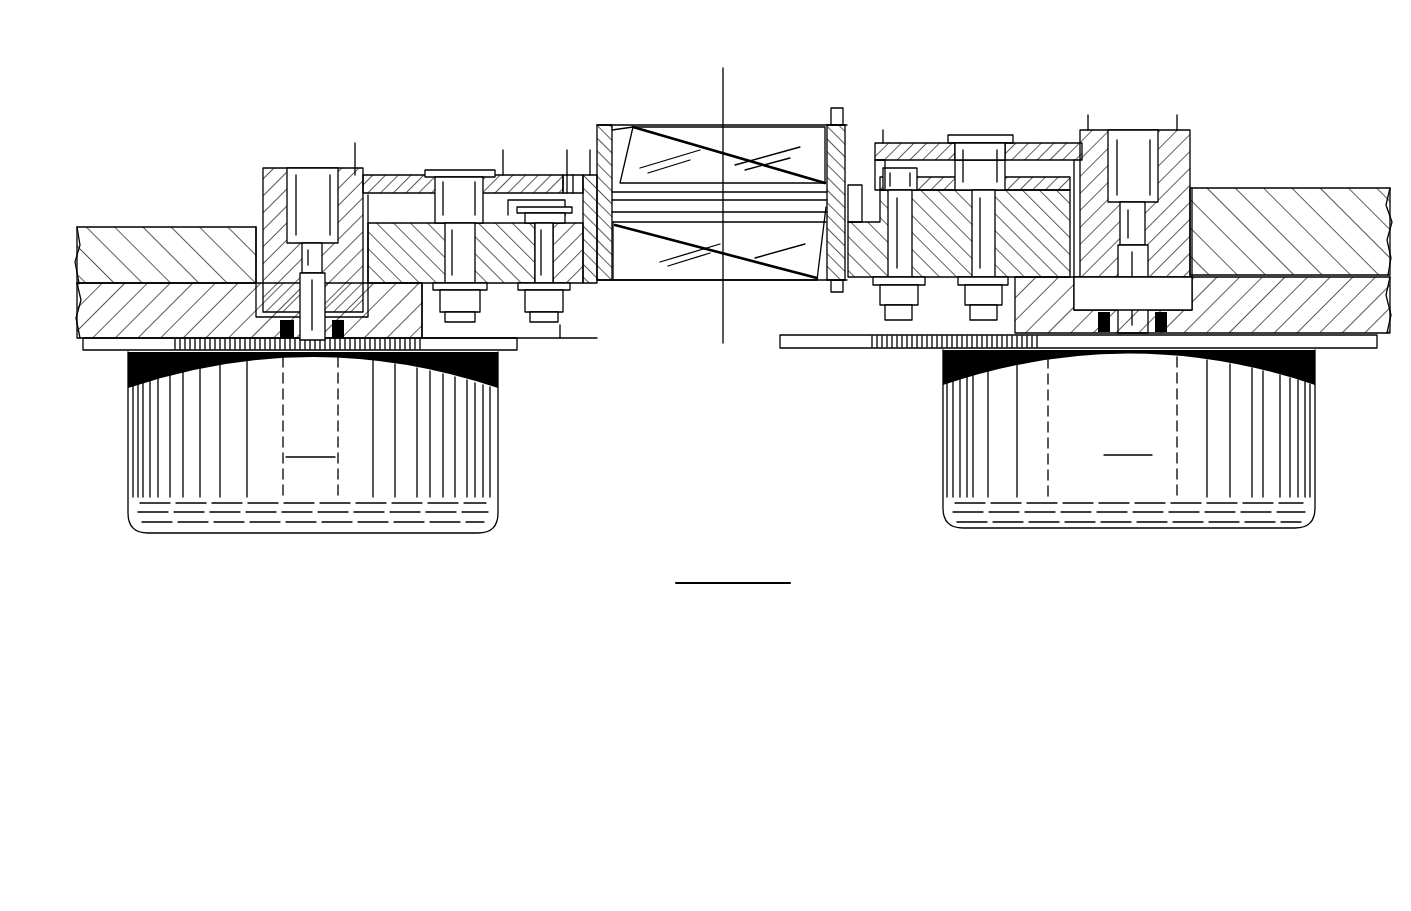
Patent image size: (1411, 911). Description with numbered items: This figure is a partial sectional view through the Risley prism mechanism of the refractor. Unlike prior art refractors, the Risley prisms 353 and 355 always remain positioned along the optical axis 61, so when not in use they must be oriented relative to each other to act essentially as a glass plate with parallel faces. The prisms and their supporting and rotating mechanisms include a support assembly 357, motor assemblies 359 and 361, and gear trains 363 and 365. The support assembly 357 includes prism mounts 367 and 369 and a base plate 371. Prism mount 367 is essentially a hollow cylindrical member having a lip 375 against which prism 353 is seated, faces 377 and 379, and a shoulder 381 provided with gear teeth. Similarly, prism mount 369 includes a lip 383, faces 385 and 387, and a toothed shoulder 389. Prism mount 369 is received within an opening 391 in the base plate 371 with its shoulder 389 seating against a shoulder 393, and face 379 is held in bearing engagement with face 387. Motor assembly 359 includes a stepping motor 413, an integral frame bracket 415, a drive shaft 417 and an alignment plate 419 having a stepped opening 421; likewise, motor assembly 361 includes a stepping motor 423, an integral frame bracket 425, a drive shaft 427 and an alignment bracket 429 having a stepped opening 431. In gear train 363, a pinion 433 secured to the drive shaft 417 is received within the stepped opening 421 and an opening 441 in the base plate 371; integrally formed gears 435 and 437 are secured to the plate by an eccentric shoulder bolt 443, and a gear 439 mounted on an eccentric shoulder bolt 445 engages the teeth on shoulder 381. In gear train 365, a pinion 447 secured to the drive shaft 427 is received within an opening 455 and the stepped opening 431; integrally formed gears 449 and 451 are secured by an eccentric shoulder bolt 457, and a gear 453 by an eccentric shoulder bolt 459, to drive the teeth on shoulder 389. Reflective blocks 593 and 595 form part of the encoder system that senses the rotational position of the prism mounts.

The optical axis 61 is at (723, 120).
The Risley prism 353 is at (750, 162).
The Risley prism 355 is at (712, 270).
The support assembly 357 is at (1309, 148).
The motor assembly 359 is at (1330, 408).
The motor assembly 361 is at (121, 420).
The gear train 363 is at (1028, 88).
The gear train 365 is at (446, 132).
The prism mount 367 is at (850, 172).
The prism mount 369 is at (620, 253).
The base plate 371 is at (1360, 200).
The lip 375 is at (622, 185).
The face 377 is at (600, 125).
The face 379 is at (625, 210).
The shoulder 381 is at (866, 205).
The lip 383 is at (832, 207).
The face 385 is at (642, 273).
The face 387 is at (623, 127).
The shoulder 389 is at (818, 225).
The opening 391 is at (820, 270).
The shoulder 393 is at (860, 270).
The stepping motor 413 is at (1129, 439).
The integral frame bracket 415 is at (1330, 350).
The drive shaft 417 is at (1137, 275).
The alignment plate 419 is at (1357, 349).
The stepped opening 421 is at (1183, 300).
The stepping motor 423 is at (313, 442).
The integral frame bracket 425 is at (118, 352).
The drive shaft 427 is at (298, 288).
The alignment bracket 429 is at (565, 325).
The stepped opening 431 is at (256, 313).
The pinion 433 is at (1175, 182).
The gear 435 is at (1068, 142).
The gear 437 is at (1038, 173).
The gear 439 is at (938, 192).
The opening 441 is at (1192, 210).
The eccentric shoulder bolt 443 is at (1010, 277).
The eccentric shoulder bolt 445 is at (882, 315).
The pinion 447 is at (277, 220).
The gear 449 is at (386, 175).
The gear 451 is at (451, 246).
The gear 453 is at (590, 270).
The opening 455 is at (256, 245).
The eccentric shoulder bolt 457 is at (433, 290).
The eccentric shoulder bolt 459 is at (513, 283).
The reflective block 593 is at (836, 108).
The reflective block 595 is at (838, 292).